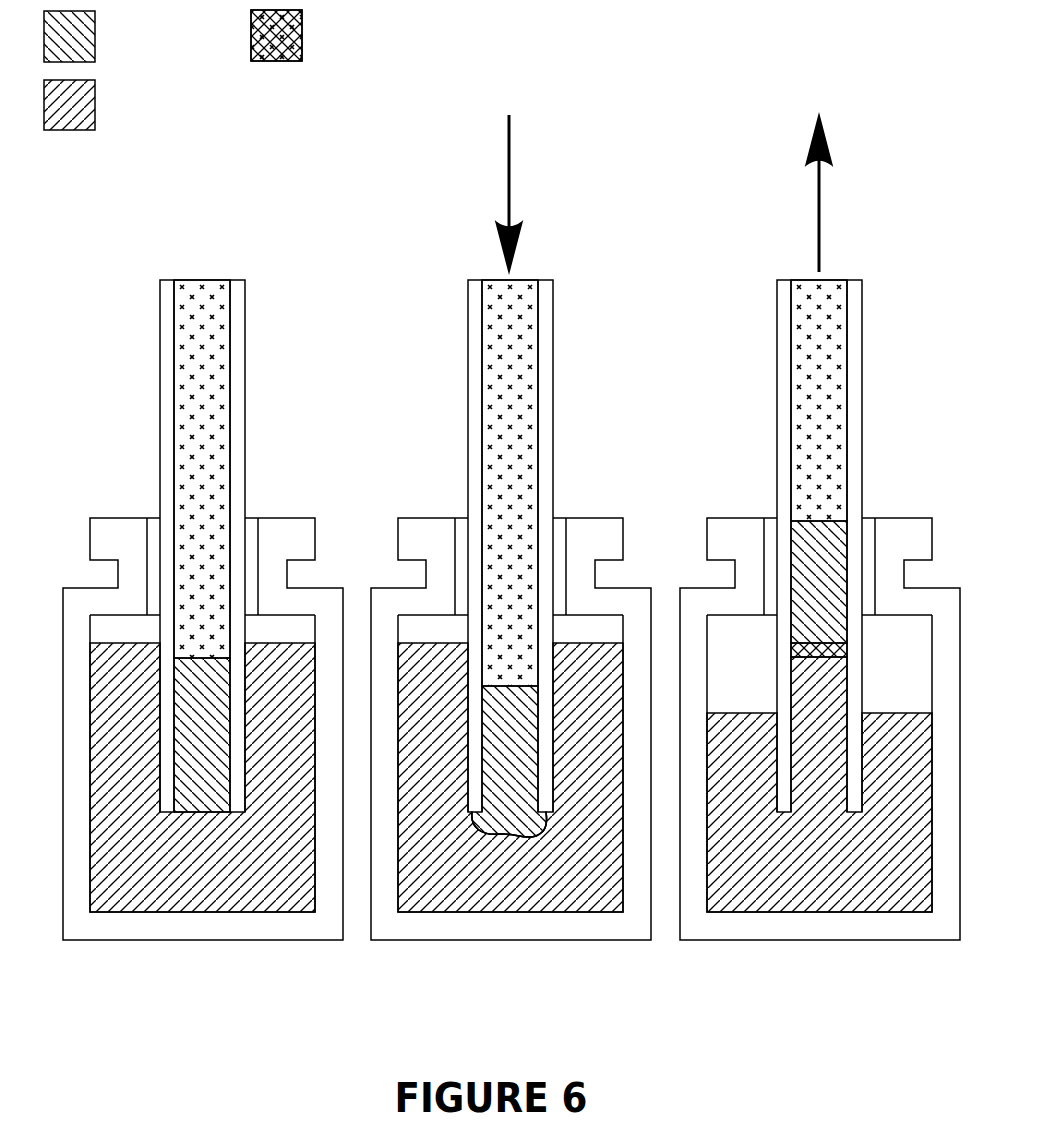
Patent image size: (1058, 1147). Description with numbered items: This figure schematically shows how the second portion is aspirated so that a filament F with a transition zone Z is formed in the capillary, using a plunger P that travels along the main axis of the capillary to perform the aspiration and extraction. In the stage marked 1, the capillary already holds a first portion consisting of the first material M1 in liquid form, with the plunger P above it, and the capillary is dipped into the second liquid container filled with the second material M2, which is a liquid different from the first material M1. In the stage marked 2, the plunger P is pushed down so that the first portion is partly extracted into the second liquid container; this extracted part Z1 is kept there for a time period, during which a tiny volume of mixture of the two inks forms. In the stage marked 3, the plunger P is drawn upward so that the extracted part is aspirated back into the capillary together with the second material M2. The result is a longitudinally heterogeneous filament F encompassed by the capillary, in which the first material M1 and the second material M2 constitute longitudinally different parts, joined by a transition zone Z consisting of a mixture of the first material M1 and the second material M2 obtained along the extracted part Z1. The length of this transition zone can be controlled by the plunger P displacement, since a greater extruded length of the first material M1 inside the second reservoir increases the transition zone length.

The first material M1 is at (445, 424).
The second material M2 is at (488, 496).
The plunger P is at (510, 348).
The transition zone Z is at (902, 679).
The extracted part Z1 is at (542, 812).
The filament F is at (799, 523).
The step 1 is at (200, 340).
The step 2 is at (509, 340).
The step 3 is at (818, 340).